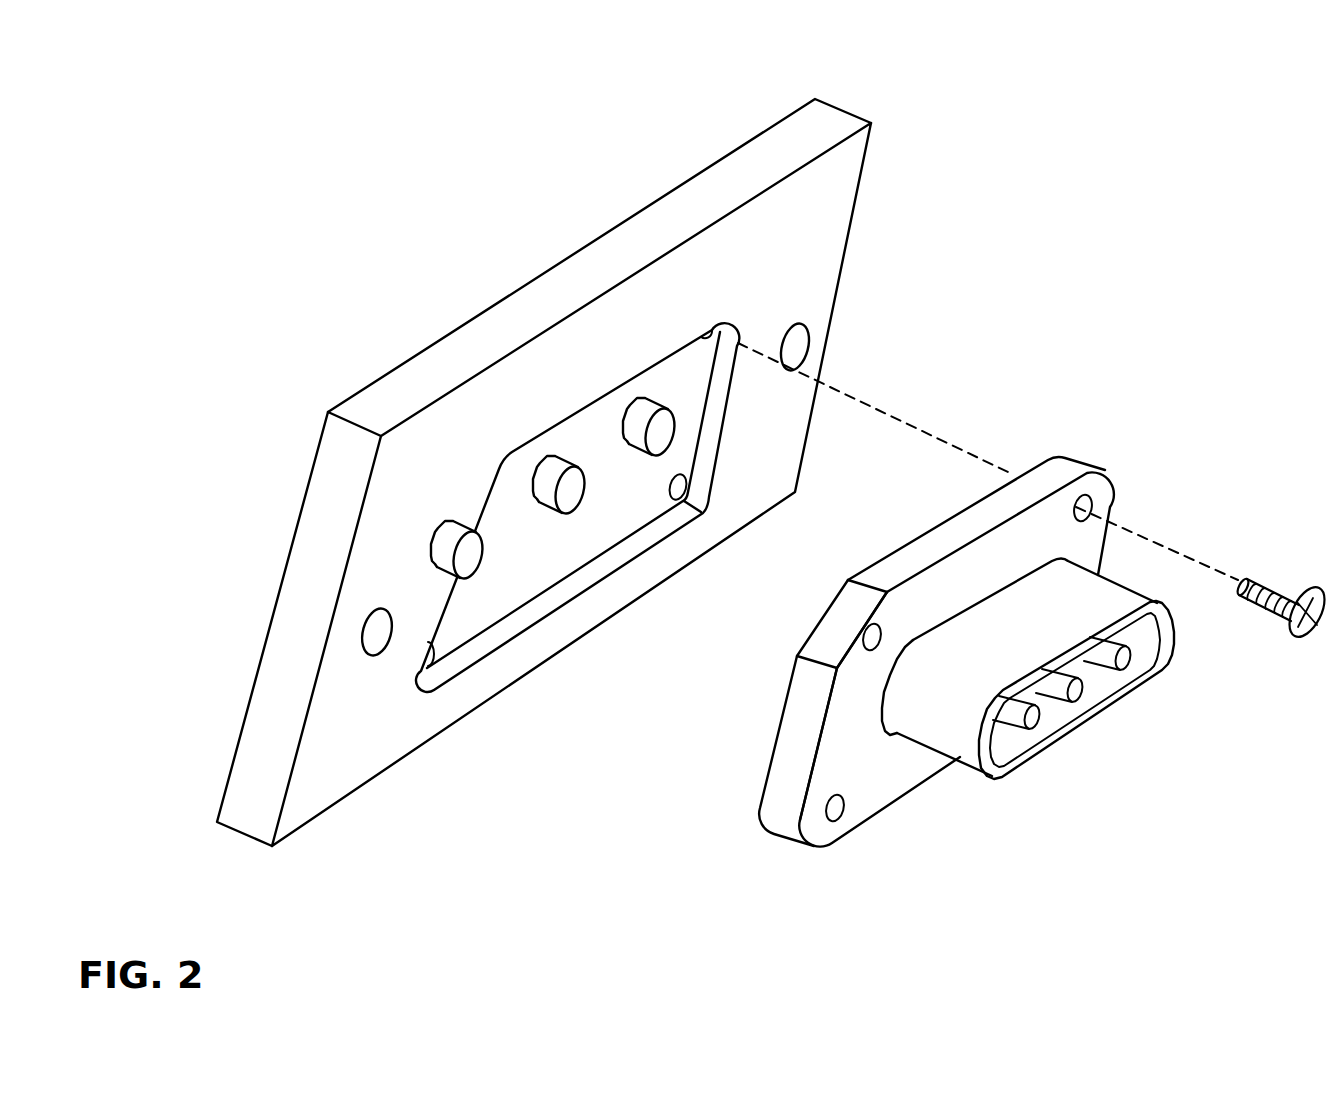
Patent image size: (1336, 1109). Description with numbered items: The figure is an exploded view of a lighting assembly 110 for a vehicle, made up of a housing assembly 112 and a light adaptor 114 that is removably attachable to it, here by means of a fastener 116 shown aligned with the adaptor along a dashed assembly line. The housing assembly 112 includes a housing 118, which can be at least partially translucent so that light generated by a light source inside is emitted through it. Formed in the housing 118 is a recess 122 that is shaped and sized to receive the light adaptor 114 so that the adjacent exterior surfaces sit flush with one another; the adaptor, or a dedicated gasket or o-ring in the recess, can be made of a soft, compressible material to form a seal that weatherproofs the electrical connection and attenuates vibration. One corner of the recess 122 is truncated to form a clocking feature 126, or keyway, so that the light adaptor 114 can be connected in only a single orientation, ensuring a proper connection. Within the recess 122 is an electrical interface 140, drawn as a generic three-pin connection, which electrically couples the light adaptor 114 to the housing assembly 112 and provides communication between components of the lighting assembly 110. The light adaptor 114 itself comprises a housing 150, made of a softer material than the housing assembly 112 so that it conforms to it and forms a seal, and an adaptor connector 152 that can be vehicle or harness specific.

The lighting assembly 110 is at (360, 97).
The housing assembly 112 is at (394, 377).
The light adaptor 114 is at (955, 651).
The fastener 116 is at (1267, 582).
The housing 118 is at (463, 348).
The recess 122 is at (495, 580).
The clocking feature 126 is at (472, 500).
The electrical interface 140 is at (465, 563).
The housing 150 is at (925, 563).
The adaptor connector 152 is at (965, 732).